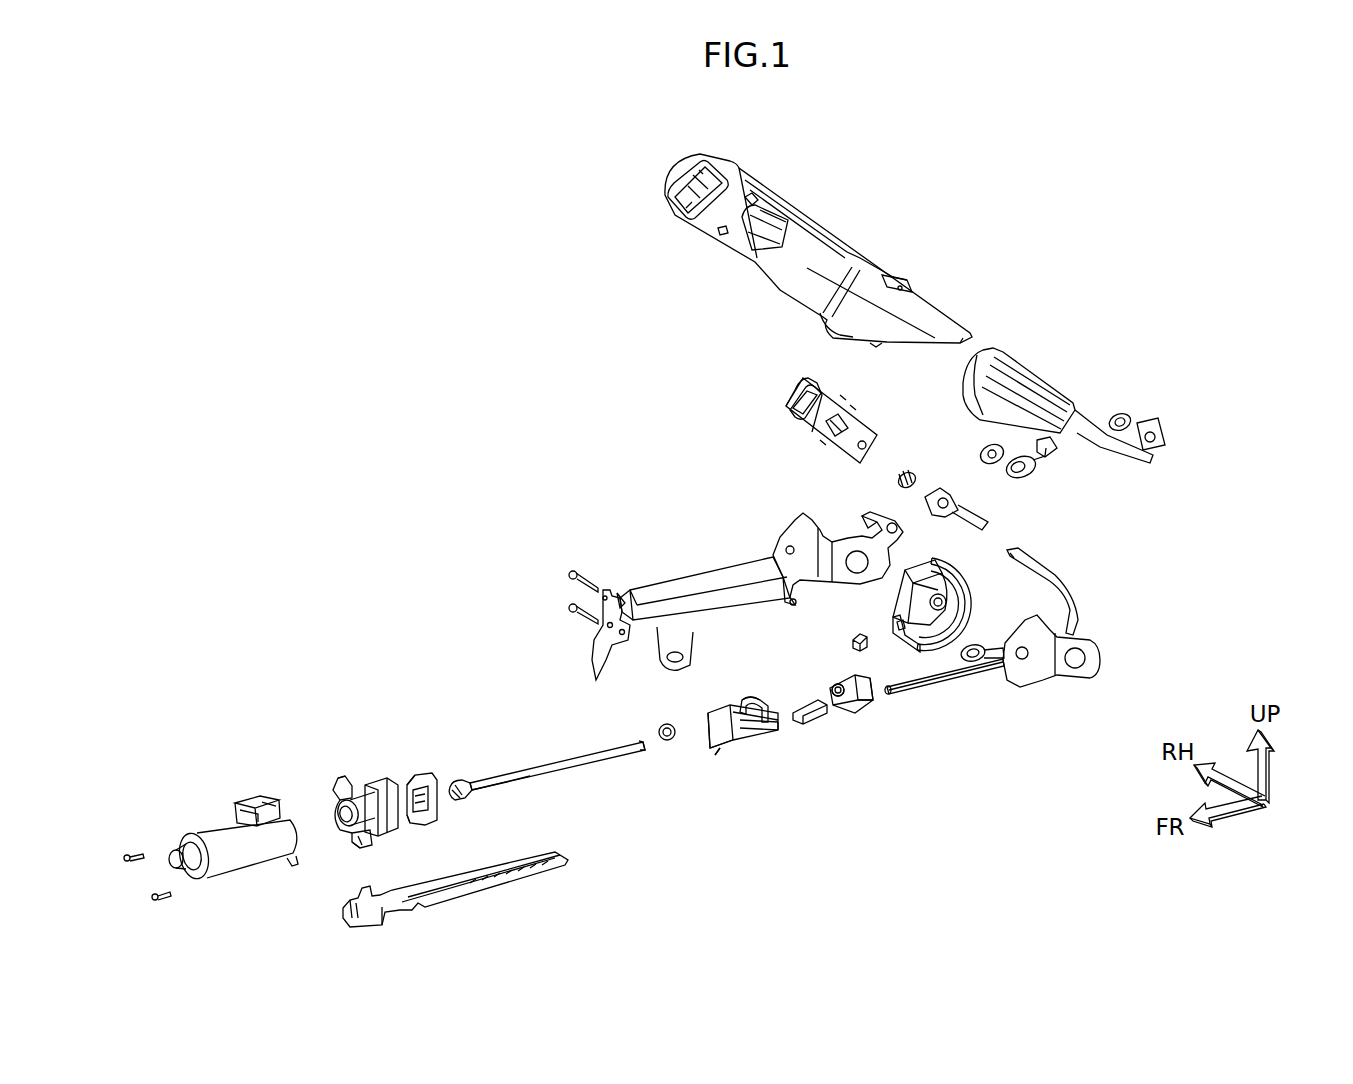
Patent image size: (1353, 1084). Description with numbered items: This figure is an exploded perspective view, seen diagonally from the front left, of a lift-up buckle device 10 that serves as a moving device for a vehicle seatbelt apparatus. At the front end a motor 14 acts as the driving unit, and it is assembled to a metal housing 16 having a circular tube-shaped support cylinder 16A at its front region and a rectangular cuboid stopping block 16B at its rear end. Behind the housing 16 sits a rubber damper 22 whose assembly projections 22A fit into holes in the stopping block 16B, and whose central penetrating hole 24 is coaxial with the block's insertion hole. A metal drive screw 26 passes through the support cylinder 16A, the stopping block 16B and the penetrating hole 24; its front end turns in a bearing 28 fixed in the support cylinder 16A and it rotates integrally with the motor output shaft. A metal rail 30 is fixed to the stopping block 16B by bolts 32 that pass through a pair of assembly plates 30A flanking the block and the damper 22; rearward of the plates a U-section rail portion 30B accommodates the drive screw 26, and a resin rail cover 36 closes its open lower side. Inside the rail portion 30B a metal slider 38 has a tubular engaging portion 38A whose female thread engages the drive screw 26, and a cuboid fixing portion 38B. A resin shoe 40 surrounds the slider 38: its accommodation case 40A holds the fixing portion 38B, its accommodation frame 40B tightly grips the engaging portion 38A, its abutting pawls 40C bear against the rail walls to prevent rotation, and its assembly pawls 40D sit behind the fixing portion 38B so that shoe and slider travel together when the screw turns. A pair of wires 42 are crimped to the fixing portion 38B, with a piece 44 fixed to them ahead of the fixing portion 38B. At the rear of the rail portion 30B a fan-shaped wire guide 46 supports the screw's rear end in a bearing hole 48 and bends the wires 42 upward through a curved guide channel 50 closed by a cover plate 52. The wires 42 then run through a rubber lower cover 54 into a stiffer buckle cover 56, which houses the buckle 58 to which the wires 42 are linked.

The lift-up buckle device 10 is at (333, 398).
The motor 14 is at (238, 870).
The housing 16 is at (360, 785).
The support cylinder 16A is at (336, 815).
The stopping block 16B is at (370, 832).
The damper 22 is at (422, 775).
The assembly projections 22A is at (408, 790).
The penetrating hole 24 is at (440, 808).
The drive screw 26 is at (528, 758).
The bearing 28 is at (672, 742).
The rail 30 is at (680, 575).
The assembly plates 30A is at (615, 650).
The rail portion 30B is at (722, 575).
The bolts 32 is at (570, 605).
The rail cover 36 is at (465, 890).
The slider 38 is at (872, 705).
The engaging portion 38A is at (833, 683).
The fixing portion 38B is at (873, 700).
The shoe 40 is at (710, 722).
The accommodation case 40A is at (750, 740).
The accommodation frame 40B is at (748, 706).
The abutting pawls 40C is at (735, 745).
The assembly pawls 40D is at (778, 722).
The wires 42 is at (1030, 550).
The piece 44 is at (820, 722).
The wire guide 46 is at (965, 612).
The bearing hole 48 is at (896, 626).
The guide channel 50 is at (960, 570).
The cover plate 52 is at (1032, 675).
The lower cover 54 is at (1043, 378).
The buckle cover 56 is at (740, 168).
The buckle 58 is at (775, 405).